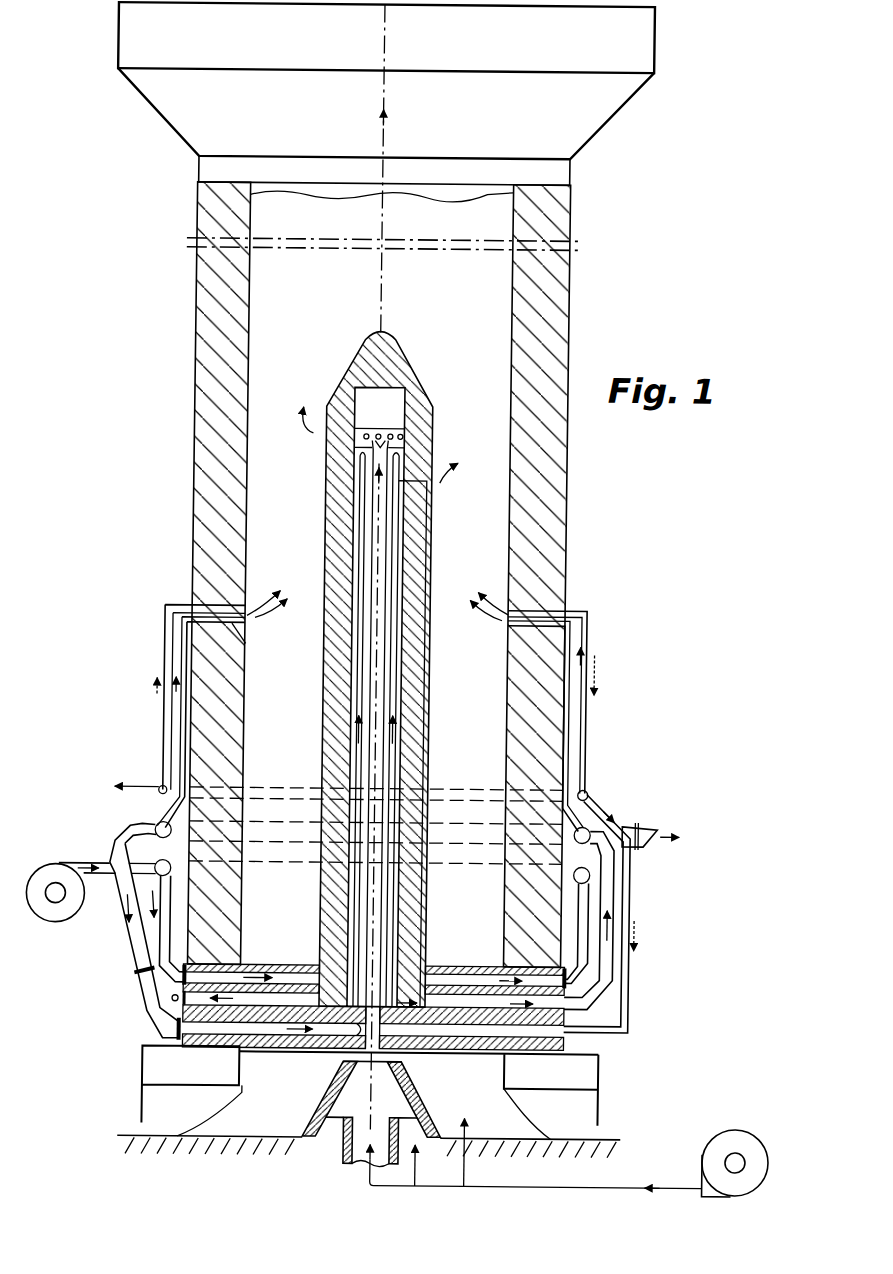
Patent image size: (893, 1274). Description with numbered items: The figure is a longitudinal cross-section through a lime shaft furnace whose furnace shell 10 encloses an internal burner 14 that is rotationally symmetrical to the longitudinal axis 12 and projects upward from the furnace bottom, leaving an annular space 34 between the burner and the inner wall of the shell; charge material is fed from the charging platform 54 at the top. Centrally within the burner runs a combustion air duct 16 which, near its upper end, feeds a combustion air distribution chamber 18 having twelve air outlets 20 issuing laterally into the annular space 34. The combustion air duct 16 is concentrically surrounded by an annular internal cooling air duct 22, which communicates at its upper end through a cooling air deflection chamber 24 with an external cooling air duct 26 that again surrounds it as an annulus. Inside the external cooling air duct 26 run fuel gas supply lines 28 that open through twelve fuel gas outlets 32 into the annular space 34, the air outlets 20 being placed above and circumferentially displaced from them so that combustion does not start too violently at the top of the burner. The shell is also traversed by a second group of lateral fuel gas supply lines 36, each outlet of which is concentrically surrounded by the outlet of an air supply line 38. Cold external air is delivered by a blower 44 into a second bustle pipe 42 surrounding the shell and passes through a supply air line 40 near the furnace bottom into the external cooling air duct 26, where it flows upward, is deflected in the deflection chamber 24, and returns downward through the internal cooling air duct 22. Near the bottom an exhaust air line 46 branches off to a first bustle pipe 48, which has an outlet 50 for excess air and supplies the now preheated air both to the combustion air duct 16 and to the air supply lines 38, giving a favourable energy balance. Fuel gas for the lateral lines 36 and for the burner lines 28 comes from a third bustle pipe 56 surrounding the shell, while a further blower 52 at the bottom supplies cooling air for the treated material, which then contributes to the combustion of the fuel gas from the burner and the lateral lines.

The furnace shell 10 is at (564, 302).
The longitudinal axis 12 is at (387, 276).
The internal burner 14 is at (353, 359).
The combustion air duct 16 is at (390, 521).
The combustion air distribution chamber 18 is at (392, 424).
The air outlets 20 is at (339, 432).
The internal cooling air duct 22 is at (371, 494).
The cooling air deflection chamber 24 is at (413, 448).
The external cooling air duct 26 is at (367, 525).
The fuel gas supply lines 28 is at (407, 547).
The fuel gas outlets 32 is at (439, 483).
The annular space 34 is at (263, 551).
The fuel gas supply lines 36 is at (243, 601).
The air supply lines 38 is at (198, 631).
The supply air line 40 is at (596, 893).
The second bustle pipe 42 is at (136, 849).
The blower 44 is at (64, 914).
The exhaust air line 46 is at (619, 959).
The first bustle pipe 48 is at (167, 819).
The outlet 50 is at (668, 819).
The blower 52 is at (733, 1139).
The charging platform 54 is at (623, 99).
The third bustle pipe 56 is at (597, 788).